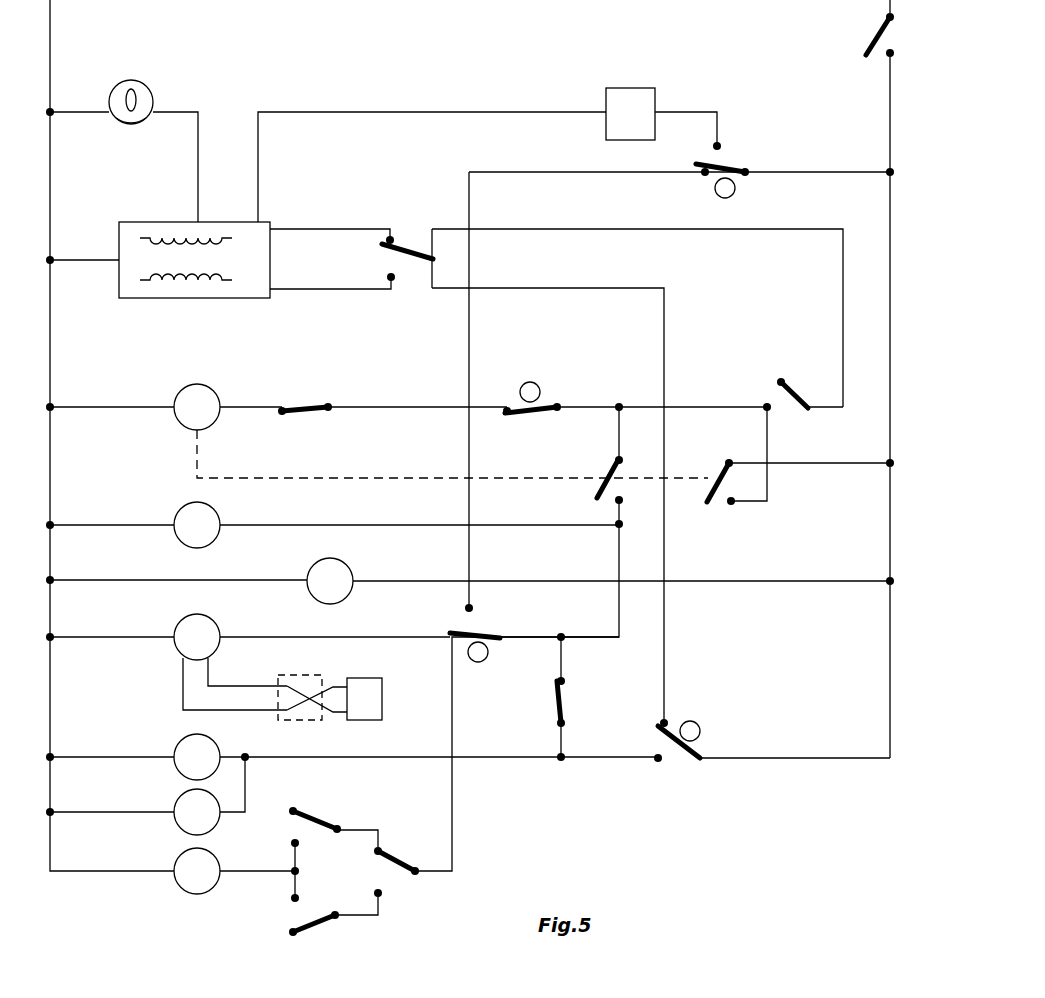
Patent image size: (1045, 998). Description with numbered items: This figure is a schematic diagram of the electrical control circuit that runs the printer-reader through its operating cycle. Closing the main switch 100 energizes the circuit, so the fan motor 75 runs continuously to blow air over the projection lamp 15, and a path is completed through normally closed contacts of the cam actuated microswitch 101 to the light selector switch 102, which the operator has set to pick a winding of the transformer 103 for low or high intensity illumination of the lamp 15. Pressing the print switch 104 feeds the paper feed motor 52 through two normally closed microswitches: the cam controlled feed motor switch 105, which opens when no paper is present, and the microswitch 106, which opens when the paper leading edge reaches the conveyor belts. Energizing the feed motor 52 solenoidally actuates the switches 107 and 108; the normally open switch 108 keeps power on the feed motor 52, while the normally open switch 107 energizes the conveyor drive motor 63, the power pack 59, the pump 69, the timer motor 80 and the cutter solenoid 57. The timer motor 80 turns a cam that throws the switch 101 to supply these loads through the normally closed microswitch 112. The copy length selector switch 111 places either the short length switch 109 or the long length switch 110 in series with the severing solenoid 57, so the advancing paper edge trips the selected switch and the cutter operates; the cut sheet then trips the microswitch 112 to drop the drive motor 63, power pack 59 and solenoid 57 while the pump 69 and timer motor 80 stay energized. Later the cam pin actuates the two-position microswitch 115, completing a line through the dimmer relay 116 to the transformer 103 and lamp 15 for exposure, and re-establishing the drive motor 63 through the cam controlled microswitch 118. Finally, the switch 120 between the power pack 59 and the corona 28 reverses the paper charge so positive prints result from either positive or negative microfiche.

The projection lamp 15 is at (132, 80).
The transformer 103 is at (156, 222).
The light selector switch 102 is at (416, 242).
The dimmer relay 116 is at (640, 88).
The switch 100 is at (868, 34).
The two-position microswitch 115 is at (738, 164).
The print switch 104 is at (772, 383).
The switch 108 is at (721, 467).
The microswitch 106 is at (325, 398).
The feed motor switch 105 is at (528, 414).
The switch 107 is at (595, 496).
The paper feed motor 52 is at (183, 419).
The conveyor drive motor 63 is at (198, 537).
The fan motor 75 is at (344, 570).
The power pack 59 is at (184, 627).
The cam controlled microswitch 118 is at (478, 633).
The switch 120 is at (303, 675).
The corona 28 is at (376, 688).
The microswitch 112 is at (565, 698).
The cam actuated microswitch 101 is at (684, 759).
The timer motor 80 is at (183, 743).
The pump 69 is at (182, 803).
The cutter solenoid 57 is at (192, 889).
The switch 110 is at (315, 818).
The copy length selector switch 111 is at (400, 876).
The switch 109 is at (313, 926).